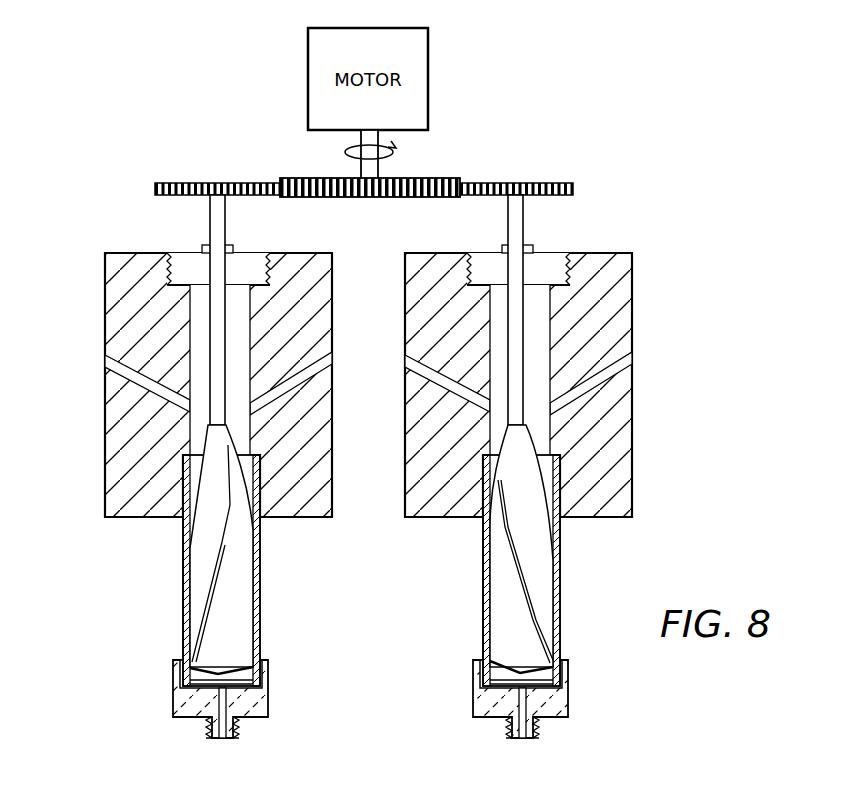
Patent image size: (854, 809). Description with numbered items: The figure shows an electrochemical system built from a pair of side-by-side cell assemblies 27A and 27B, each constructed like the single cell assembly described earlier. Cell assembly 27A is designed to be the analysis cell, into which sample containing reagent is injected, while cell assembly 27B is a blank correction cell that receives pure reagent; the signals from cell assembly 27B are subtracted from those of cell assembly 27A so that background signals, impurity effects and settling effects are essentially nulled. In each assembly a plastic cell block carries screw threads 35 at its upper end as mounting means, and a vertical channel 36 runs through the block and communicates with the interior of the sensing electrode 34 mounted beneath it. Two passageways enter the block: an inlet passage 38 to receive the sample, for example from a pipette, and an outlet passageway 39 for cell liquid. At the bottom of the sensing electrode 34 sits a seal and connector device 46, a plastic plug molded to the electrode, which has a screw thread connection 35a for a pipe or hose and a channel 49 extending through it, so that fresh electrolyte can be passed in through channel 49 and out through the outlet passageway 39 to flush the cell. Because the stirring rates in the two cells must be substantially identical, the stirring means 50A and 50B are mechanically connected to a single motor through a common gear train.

The cell assembly 27A is at (172, 582).
The cell assembly 27B is at (464, 582).
The sensing electrode 34 is at (262, 618).
The screw threads 35 is at (268, 262).
The screw thread connection 35a is at (238, 732).
The vertical channel 36 is at (250, 322).
The inlet passage 38 is at (320, 362).
The outlet passageway 39 is at (113, 365).
The seal and connector device 46 is at (268, 692).
The channel 49 is at (214, 737).
The stirring means 50A is at (237, 597).
The stirring means 50B is at (540, 597).